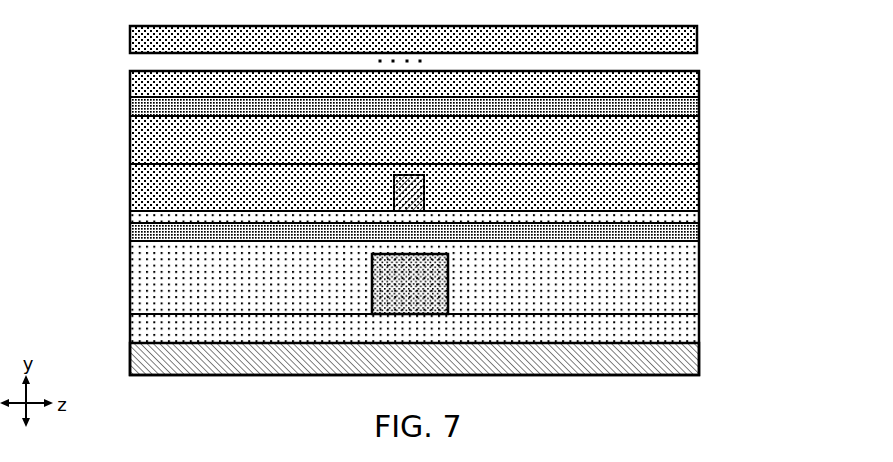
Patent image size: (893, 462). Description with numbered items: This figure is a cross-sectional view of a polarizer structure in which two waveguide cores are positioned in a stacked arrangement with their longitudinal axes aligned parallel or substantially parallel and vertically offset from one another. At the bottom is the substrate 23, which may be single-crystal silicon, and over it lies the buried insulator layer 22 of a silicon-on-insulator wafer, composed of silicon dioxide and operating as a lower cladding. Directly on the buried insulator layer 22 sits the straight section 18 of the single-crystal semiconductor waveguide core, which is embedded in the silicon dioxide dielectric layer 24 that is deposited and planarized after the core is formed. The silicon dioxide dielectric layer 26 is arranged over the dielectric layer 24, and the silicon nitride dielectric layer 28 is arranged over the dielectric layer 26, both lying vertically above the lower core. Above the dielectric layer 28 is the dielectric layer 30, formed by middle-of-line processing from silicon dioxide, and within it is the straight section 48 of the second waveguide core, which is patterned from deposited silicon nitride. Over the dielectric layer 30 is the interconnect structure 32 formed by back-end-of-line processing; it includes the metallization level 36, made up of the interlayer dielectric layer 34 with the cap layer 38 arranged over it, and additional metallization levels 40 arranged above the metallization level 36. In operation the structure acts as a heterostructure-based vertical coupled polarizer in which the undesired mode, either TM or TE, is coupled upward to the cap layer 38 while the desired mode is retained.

The straight section 18 is at (433, 300).
The buried insulator layer 22 is at (172, 332).
The substrate 23 is at (680, 360).
The dielectric layer 24 is at (148, 280).
The dielectric layer 26 is at (680, 232).
The dielectric layer 28 is at (148, 217).
The dielectric layer 30 is at (680, 190).
The interconnect structure 32 is at (699, 43).
The interlayer dielectric layer 34 is at (680, 143).
The metallization level 36 is at (113, 98).
The cap layer 38 is at (680, 107).
The additional metallization levels 40 is at (113, 27).
The straight section 48 is at (408, 197).